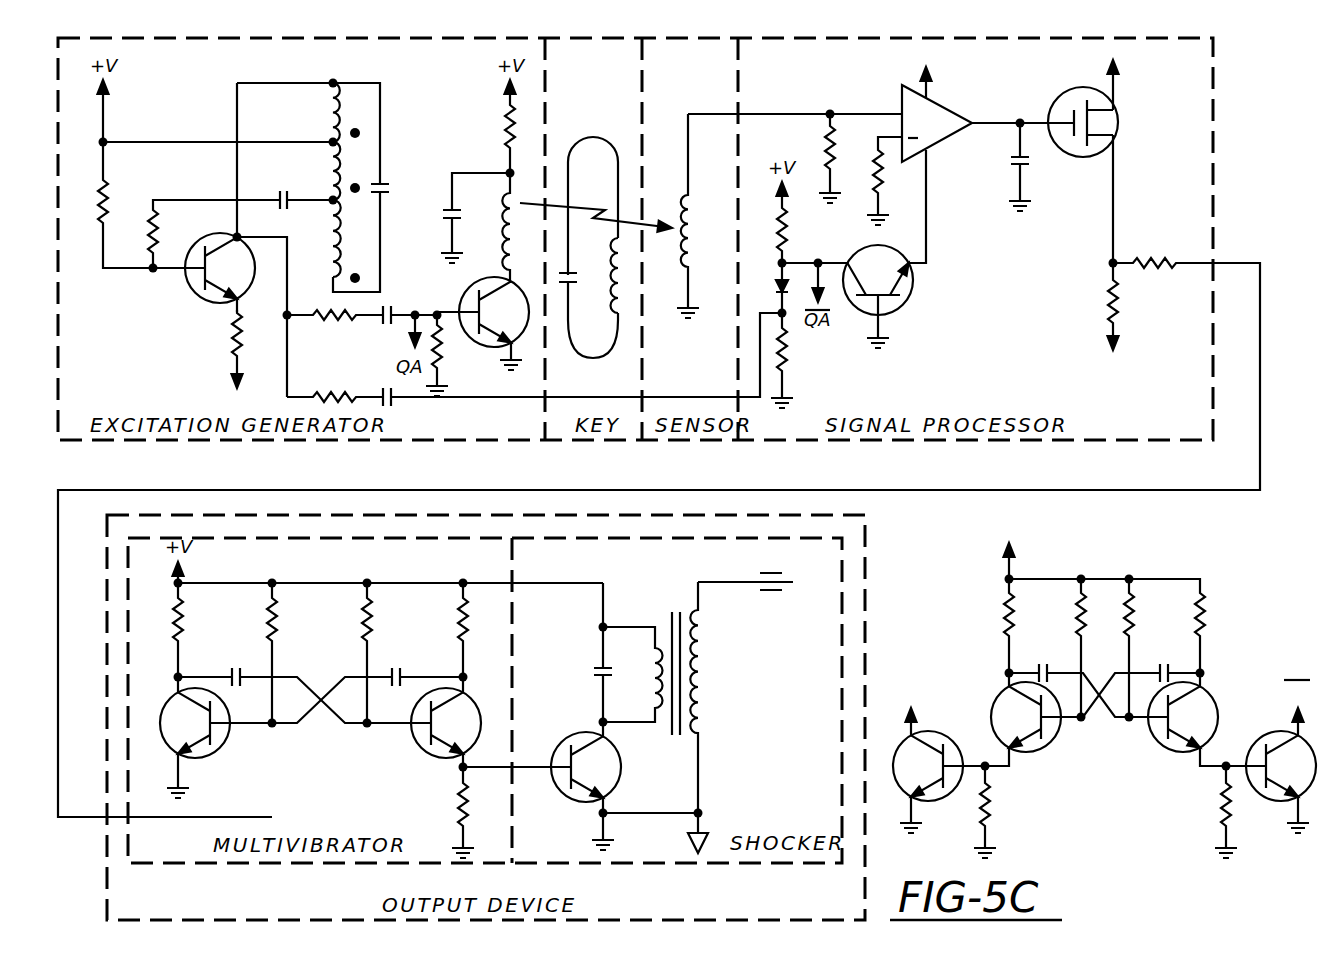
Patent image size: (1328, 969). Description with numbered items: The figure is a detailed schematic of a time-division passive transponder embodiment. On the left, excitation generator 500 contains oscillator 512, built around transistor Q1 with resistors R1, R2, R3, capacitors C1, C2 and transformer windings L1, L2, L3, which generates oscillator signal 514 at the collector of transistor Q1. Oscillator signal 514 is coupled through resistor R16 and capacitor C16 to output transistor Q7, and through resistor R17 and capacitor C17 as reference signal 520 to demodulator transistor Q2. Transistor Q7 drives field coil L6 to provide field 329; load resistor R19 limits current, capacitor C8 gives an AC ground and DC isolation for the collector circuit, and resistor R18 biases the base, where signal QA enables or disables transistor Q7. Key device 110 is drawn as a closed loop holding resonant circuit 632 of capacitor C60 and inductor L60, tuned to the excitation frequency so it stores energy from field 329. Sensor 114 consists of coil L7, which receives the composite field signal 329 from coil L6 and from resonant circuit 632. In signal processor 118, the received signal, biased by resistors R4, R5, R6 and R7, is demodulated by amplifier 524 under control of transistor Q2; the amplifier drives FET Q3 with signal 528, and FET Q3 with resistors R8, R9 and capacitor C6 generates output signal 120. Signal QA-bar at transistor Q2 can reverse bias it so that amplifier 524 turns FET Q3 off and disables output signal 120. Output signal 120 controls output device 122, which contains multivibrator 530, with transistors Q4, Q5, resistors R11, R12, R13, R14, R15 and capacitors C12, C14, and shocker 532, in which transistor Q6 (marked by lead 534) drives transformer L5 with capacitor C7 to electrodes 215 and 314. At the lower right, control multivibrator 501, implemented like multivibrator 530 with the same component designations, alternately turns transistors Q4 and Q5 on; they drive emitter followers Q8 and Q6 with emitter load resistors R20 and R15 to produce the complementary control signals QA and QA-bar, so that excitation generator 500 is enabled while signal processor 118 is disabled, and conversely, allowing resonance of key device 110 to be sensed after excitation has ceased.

The excitation generator 500 is at (290, 443).
The oscillator 512 is at (370, 70).
The oscillator signal 514 is at (238, 229).
The oscillator reference signal 520 is at (498, 397).
The key device 110 is at (606, 442).
The field signal 329 is at (648, 222).
The resonant circuit 632 is at (626, 347).
The sensor 114 is at (713, 442).
The signal processor 118 is at (950, 442).
The amplifier 524 is at (904, 85).
The amplifier output signal 528 is at (1005, 123).
The output signal 120 is at (1260, 470).
The output device 122 is at (494, 921).
The multivibrator 530 is at (346, 864).
The shocker 532 is at (701, 863).
The drive transistor 534 is at (530, 762).
The electrode 215 is at (703, 833).
The electrode 314 is at (806, 593).
The control multivibrator 501 is at (950, 582).
The resistor R1 is at (247, 360).
The resistor R2 is at (214, 234).
The resistor R3 is at (151, 205).
The resistor R4 is at (797, 229).
The resistor R5 is at (794, 360).
The resistor R6 is at (841, 158).
The resistor R7 is at (889, 181).
The resistor R8 is at (1124, 318).
The resistor R9 is at (1147, 253).
The resistor R11 is at (387, 653).
The resistor R12 is at (483, 630).
The resistor R13 is at (292, 653).
The resistor R14 is at (198, 630).
The emitter load resistor R15 is at (480, 812).
The resistor R16 is at (335, 326).
The resistor R17 is at (335, 387).
The resistor R18 is at (454, 355).
The load resistor R19 is at (492, 133).
The emitter load resistor R20 is at (1003, 812).
The capacitor C1 is at (393, 182).
The capacitor C2 is at (299, 191).
The capacitor C6 is at (1032, 167).
The capacitor C7 is at (616, 674).
The capacitor C8 is at (463, 218).
The capacitor C12 is at (336, 686).
The capacitor C14 is at (304, 686).
The capacitor C16 is at (402, 324).
The capacitor C17 is at (385, 389).
The capacitor C60 is at (581, 268).
The transformer winding L1 is at (349, 112).
The transformer winding L2 is at (349, 171).
The transformer winding L3 is at (349, 238).
The shocker transformer L5 is at (650, 707).
The field coil L6 is at (494, 228).
The coil L7 is at (698, 216).
The inductor L60 is at (595, 285).
The transistor Q1 is at (206, 271).
The demodulator transistor Q2 is at (894, 296).
The FET Q3 is at (1099, 149).
The transistor Q4 is at (185, 737).
The transistor Q5 is at (459, 722).
The transistor Q6 is at (557, 786).
The output transistor Q7 is at (483, 317).
The transistor Q8 is at (931, 759).